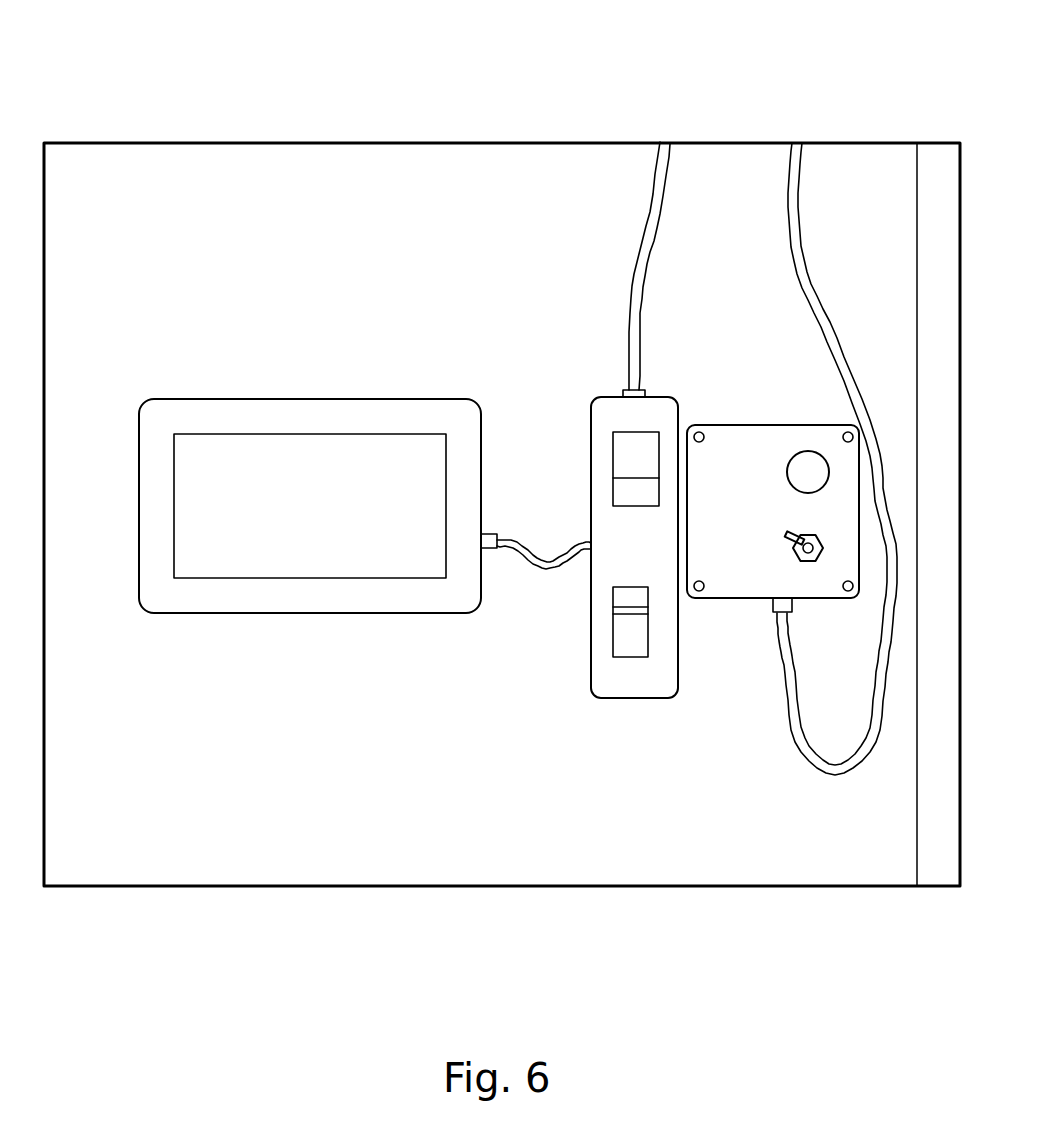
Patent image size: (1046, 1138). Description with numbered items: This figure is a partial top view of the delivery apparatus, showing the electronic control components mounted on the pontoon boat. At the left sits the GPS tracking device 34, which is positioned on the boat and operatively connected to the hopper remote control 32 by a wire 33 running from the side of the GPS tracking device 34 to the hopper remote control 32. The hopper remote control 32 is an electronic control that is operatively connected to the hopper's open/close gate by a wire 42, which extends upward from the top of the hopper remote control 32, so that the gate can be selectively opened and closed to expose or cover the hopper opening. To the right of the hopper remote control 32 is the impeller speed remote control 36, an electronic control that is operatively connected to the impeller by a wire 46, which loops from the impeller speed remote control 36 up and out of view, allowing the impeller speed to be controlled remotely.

The hopper remote control 32 is at (601, 358).
The wire 33 is at (483, 746).
The GPS tracking device 34 is at (310, 316).
The impeller speed remote control 36 is at (773, 315).
The wire 42 is at (641, 211).
The wire 46 is at (857, 398).